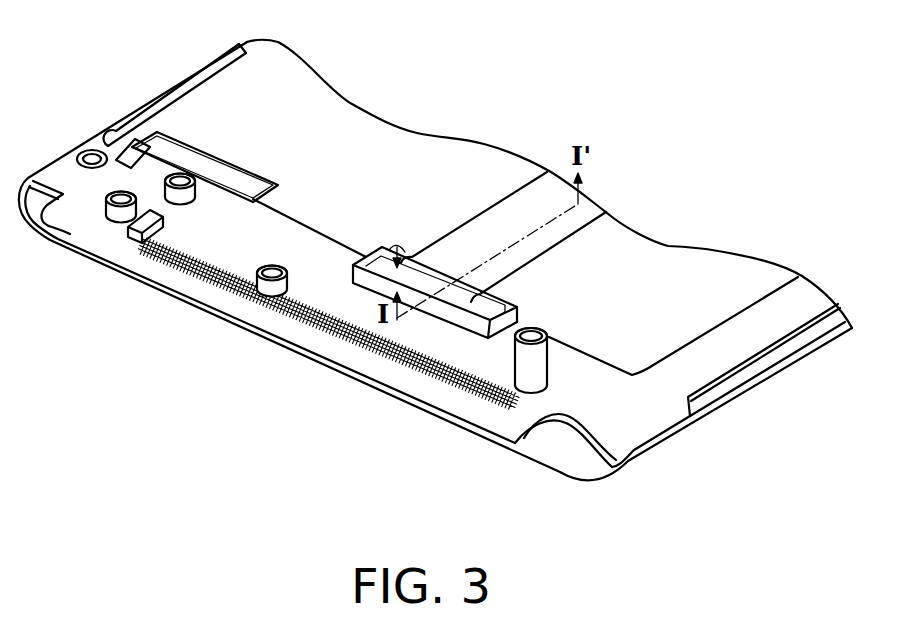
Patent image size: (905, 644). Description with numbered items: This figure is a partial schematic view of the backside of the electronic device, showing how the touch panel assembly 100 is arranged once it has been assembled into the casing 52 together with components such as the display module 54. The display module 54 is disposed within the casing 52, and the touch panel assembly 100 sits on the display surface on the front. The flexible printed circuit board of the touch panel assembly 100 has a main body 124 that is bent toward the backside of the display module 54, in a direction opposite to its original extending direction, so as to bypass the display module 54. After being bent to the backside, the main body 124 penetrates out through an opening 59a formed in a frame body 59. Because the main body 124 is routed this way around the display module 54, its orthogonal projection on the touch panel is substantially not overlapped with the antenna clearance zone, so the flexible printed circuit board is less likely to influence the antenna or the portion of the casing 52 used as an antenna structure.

The casing 52 is at (210, 306).
The display module 54 is at (727, 268).
The frame body 59 is at (330, 252).
The opening 59a is at (385, 266).
The main body 124 is at (600, 227).
The touch panel assembly 100 is at (809, 507).